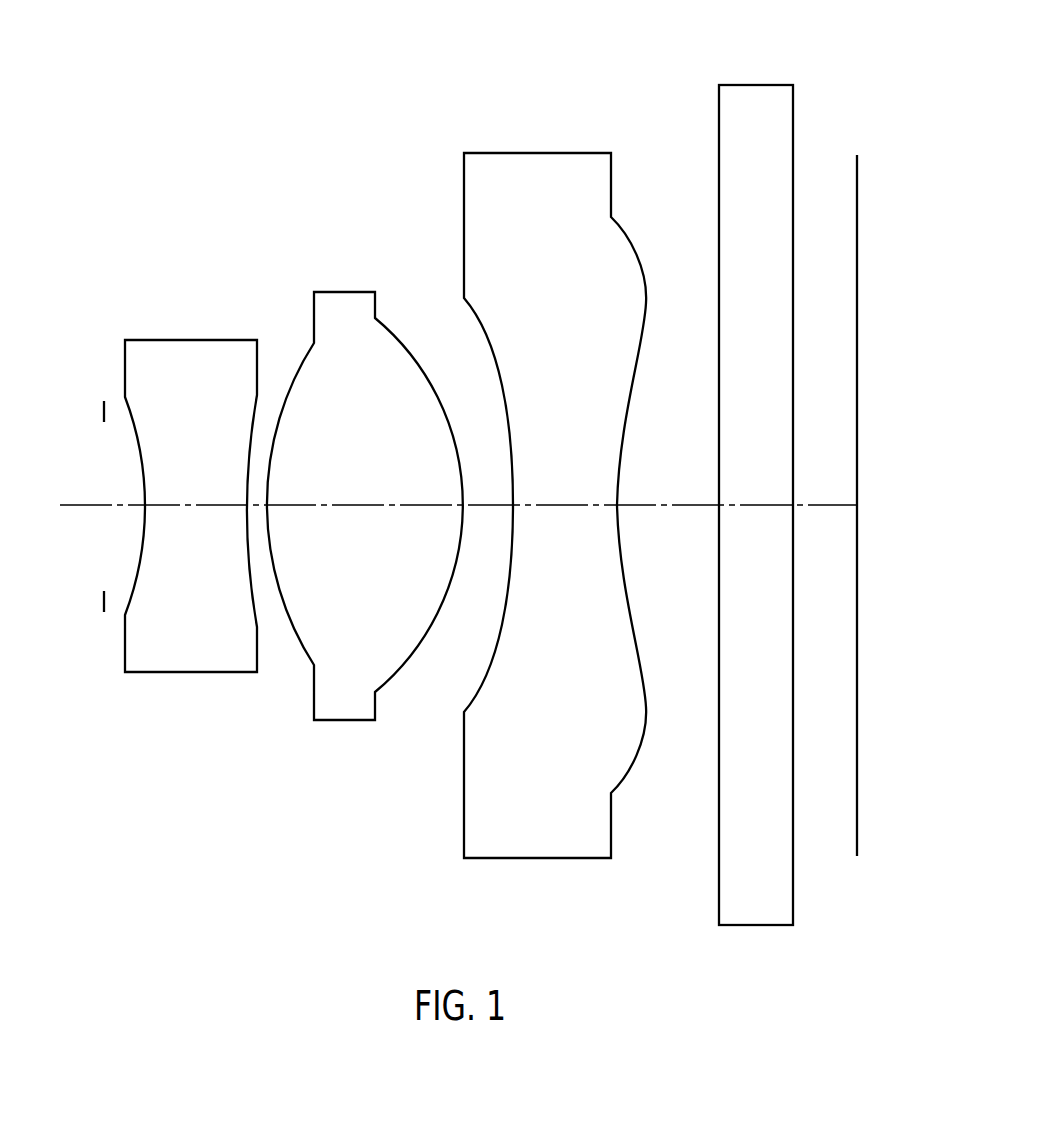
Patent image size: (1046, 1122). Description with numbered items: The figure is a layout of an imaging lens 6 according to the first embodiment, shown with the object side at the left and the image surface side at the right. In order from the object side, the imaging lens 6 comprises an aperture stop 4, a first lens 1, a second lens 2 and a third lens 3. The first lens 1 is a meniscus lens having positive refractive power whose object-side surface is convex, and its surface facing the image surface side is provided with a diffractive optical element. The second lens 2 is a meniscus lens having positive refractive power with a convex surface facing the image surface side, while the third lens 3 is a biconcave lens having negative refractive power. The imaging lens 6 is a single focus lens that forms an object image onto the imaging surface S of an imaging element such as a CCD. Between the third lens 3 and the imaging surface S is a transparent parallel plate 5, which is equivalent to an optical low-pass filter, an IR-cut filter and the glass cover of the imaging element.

The first lens 1 is at (193, 340).
The second lens 2 is at (346, 292).
The third lens 3 is at (548, 153).
The aperture stop 4 is at (100, 412).
The parallel plate 5 is at (756, 85).
The imaging lens 6 is at (264, 98).
The imaging surface S is at (859, 207).